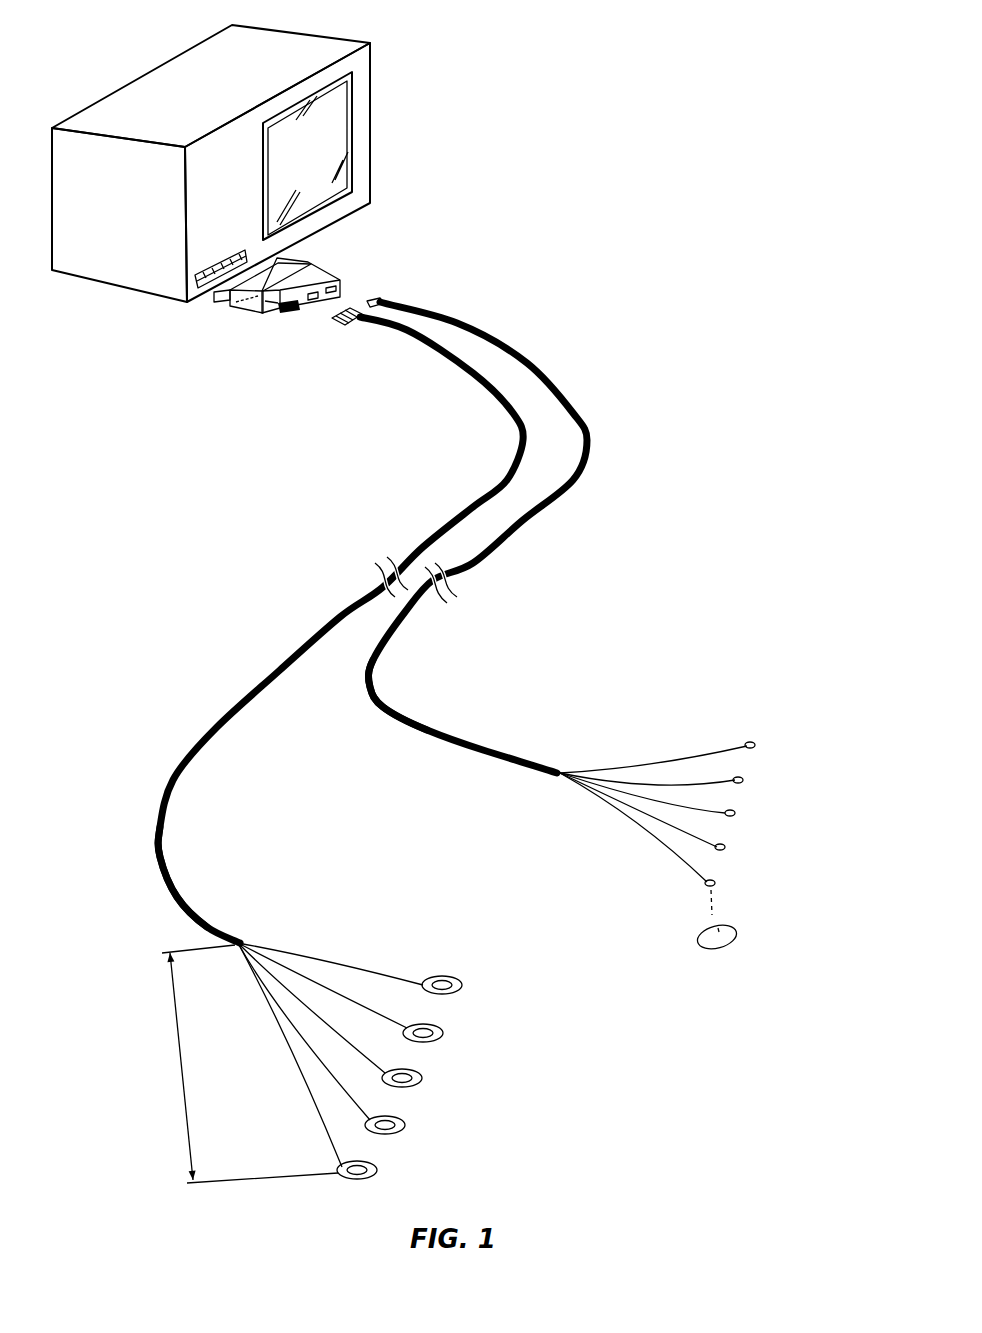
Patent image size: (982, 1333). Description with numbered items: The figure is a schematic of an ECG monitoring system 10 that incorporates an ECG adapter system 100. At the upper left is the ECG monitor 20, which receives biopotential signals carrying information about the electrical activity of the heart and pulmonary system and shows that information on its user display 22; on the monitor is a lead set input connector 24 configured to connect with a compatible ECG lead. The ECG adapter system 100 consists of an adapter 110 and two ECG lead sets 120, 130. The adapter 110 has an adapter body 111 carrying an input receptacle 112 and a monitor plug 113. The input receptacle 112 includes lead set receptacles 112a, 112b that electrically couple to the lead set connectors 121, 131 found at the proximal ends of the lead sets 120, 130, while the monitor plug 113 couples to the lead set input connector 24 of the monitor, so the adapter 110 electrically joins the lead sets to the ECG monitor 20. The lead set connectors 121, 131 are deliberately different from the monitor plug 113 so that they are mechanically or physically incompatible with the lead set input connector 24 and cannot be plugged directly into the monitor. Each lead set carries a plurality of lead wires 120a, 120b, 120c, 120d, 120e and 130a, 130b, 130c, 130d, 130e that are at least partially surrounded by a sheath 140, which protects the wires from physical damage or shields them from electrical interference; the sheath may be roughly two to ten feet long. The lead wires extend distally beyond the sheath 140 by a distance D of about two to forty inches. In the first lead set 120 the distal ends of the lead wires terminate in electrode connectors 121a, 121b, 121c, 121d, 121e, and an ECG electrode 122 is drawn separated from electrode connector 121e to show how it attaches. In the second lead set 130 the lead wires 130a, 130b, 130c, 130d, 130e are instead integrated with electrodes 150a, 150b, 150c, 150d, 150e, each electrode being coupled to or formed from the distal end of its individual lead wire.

The ECG monitoring system 10 is at (693, 225).
The ECG monitor 20 is at (246, 161).
The user display 22 is at (335, 131).
The lead set input connector 24 is at (252, 252).
The ECG adapter system 100 is at (479, 732).
The adapter 110 is at (285, 317).
The adapter body 111 is at (247, 307).
The input receptacle 112 is at (351, 317).
The lead set receptacle 112a is at (337, 292).
The lead set receptacle 112b is at (317, 307).
The monitor plug 113 is at (222, 295).
The ECG lead set 120 is at (598, 633).
The lead wire 120a is at (663, 762).
The lead wire 120b is at (710, 783).
The lead wire 120c is at (670, 812).
The lead wire 120d is at (637, 822).
The lead wire 120e is at (605, 825).
The lead set connector 121 is at (383, 296).
The electrode connector 121a is at (753, 742).
The electrode connector 121b is at (740, 775).
The electrode connector 121c is at (732, 810).
The electrode connector 121d is at (722, 843).
The electrode connector 121e is at (713, 880).
The ECG electrode 122 is at (732, 948).
The ECG lead set 130 is at (345, 743).
The lead wire 130a is at (393, 957).
The lead wire 130b is at (320, 990).
The lead wire 130c is at (323, 1020).
The lead wire 130d is at (318, 1063).
The lead wire 130e is at (305, 1107).
The lead set connector 131 is at (338, 325).
The sheath 140 is at (428, 723).
The electrode 150a is at (460, 982).
The electrode 150b is at (438, 1027).
The electrode 150c is at (418, 1073).
The electrode 150d is at (398, 1117).
The electrode 150e is at (375, 1165).
The distance D is at (178, 1070).